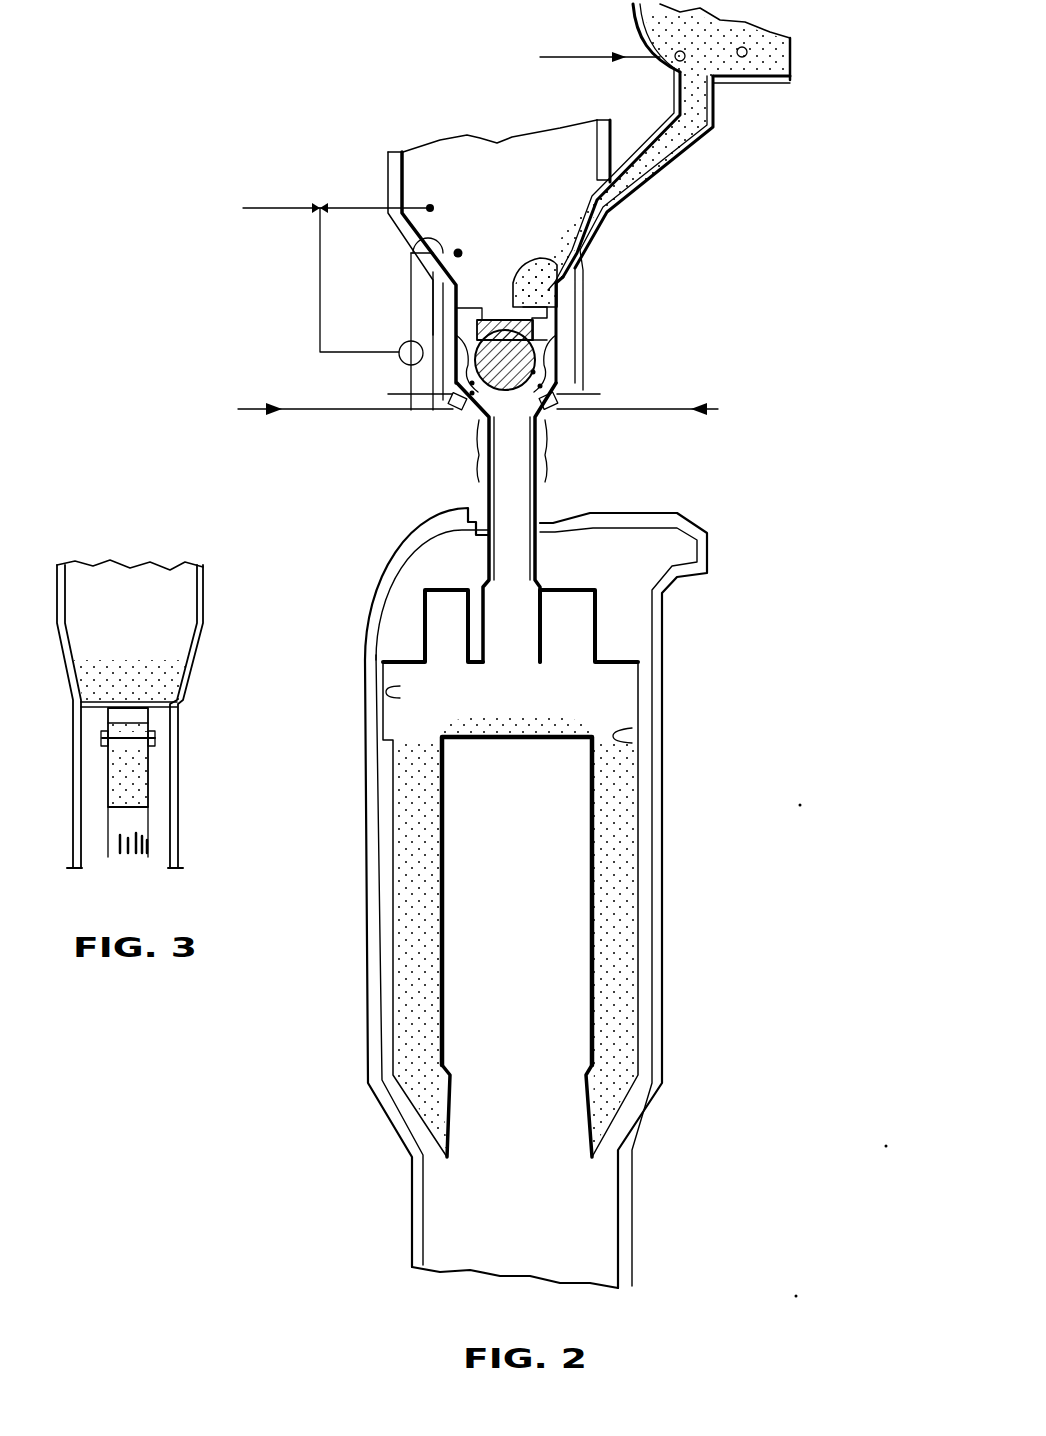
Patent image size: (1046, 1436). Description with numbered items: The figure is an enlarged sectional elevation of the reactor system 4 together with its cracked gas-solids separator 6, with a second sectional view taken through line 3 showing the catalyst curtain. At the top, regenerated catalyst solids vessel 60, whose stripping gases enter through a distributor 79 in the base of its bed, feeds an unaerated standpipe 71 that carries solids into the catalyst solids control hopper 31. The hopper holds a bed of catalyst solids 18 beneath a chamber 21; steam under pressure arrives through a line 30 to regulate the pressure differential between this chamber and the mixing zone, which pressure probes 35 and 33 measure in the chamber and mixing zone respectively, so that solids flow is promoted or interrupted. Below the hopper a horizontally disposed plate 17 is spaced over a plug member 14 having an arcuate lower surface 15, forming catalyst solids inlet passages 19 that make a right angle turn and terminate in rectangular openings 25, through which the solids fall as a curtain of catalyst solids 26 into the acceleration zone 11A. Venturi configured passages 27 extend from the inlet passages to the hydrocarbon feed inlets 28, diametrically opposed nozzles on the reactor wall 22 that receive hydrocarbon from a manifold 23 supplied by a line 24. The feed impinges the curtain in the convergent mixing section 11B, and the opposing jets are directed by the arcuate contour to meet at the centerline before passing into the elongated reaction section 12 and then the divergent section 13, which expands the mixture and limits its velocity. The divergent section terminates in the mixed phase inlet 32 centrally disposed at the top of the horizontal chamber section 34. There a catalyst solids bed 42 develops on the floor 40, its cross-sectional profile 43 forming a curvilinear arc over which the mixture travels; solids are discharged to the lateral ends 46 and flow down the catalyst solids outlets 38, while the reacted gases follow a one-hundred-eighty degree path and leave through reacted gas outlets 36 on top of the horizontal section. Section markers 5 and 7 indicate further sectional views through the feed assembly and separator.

In FIG. 2, the regenerated catalyst solids vessel 60 is at (633, 22).
In FIG. 2, the distributor 79 is at (676, 60).
In FIG. 2, the standpipe 71 is at (655, 174).
In FIG. 2, the chamber 21 is at (500, 255).
In FIG. 2, the catalyst solids control hopper 31 is at (390, 173).
In FIG. 2, the line 30 is at (283, 212).
In FIG. 2, the pressure probe 35 is at (455, 253).
In FIG. 2, the curtain of catalyst solids 26 is at (458, 333).
In FIG. 3, the curtain of catalyst solids 26 is at (113, 753).
In FIG. 2, the section line 3- 3 is at (482, 285).
In FIG. 2, the bed of catalyst solids 18 is at (512, 288).
In FIG. 3, the bed of catalyst solids 18 is at (143, 647).
In FIG. 2, the catalyst solids inlet passages 19 is at (558, 256).
In FIG. 3, the catalyst solids inlet passages 19 is at (137, 713).
In FIG. 2, the rectangular openings 25 is at (550, 300).
In FIG. 2, the acceleration zone 11A is at (575, 332).
In FIG. 2, the horizontally disposed plate 17 is at (550, 316).
In FIG. 3, the horizontally disposed plate 17 is at (173, 702).
In FIG. 2, the plug member 14 is at (540, 350).
In FIG. 2, the hydrocarbon feed inlets 28 is at (545, 372).
In FIG. 3, the hydrocarbon feed inlets 28 is at (147, 838).
In FIG. 2, the section line 5- 5 is at (283, 333).
In FIG. 2, the reactor system 4 is at (395, 395).
In FIG. 2, the line 24 is at (300, 409).
In FIG. 2, the pressure probe 33 is at (430, 402).
In FIG. 2, the arcuate lower surface 15 is at (680, 394).
In FIG. 2, the manifold 23 is at (457, 427).
In FIG. 2, the reactor wall 22 is at (477, 467).
In FIG. 2, the convergent mixing section 11B is at (542, 440).
In FIG. 2, the elongated reaction section 12 is at (542, 481).
In FIG. 2, the divergent section 13 is at (540, 578).
In FIG. 2, the section line 7- 7 is at (313, 542).
In FIG. 2, the reacted gas outlets 36 is at (447, 618).
In FIG. 2, the mixed phase inlet 32 is at (510, 648).
In FIG. 2, the lateral ends 46 is at (386, 692).
In FIG. 2, the horizontal chamber section 34 is at (513, 711).
In FIG. 2, the catalyst solids bed 42 is at (555, 722).
In FIG. 2, the cross-sectional profile 43 is at (466, 728).
In FIG. 2, the separator 6 is at (650, 702).
In FIG. 2, the floor 40 is at (490, 742).
In FIG. 2, the catalyst solids outlets 38 is at (402, 757).
In FIG. 3, the venturi configured passages 27 is at (156, 738).